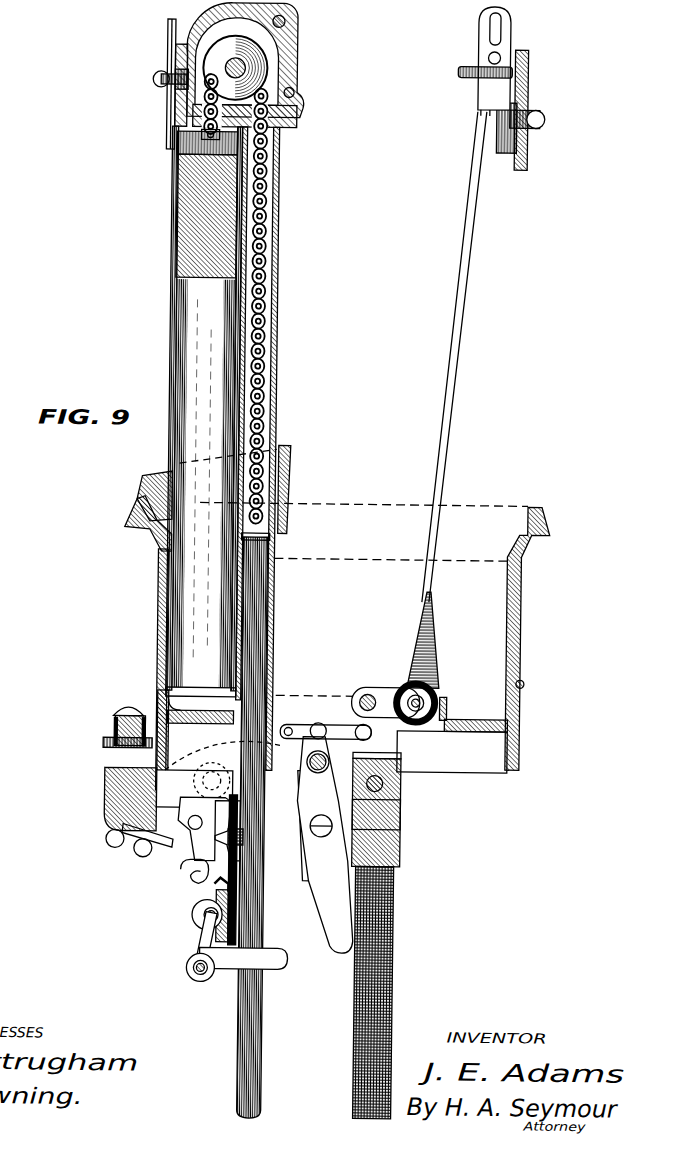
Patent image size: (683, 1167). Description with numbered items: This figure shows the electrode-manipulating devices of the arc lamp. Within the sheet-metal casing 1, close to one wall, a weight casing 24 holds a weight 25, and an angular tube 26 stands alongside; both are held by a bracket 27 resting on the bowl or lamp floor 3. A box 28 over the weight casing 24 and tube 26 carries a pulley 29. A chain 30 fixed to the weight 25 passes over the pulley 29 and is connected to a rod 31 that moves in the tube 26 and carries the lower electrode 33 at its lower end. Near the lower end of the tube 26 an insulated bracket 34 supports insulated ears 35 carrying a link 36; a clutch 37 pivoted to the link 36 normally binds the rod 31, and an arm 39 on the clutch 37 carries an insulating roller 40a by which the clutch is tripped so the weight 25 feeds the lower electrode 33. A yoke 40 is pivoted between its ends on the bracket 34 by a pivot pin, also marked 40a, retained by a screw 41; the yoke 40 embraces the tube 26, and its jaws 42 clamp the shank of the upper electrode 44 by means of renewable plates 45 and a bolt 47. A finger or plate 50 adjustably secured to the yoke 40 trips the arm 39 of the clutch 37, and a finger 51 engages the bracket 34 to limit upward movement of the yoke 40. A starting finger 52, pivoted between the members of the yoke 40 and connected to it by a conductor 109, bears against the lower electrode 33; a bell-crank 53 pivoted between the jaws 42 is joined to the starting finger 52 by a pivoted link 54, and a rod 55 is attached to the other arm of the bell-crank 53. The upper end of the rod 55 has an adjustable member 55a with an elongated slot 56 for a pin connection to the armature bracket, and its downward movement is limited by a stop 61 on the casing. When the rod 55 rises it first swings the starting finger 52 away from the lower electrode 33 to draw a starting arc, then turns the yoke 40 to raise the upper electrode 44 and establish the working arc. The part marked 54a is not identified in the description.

The casing 1 is at (167, 146).
The bowl 3 is at (529, 627).
The weight casing 24 is at (179, 321).
The weight 25 is at (178, 242).
The tube 26 is at (281, 284).
The bracket 27 is at (164, 476).
The box 28 is at (292, 41).
The pulley 29 is at (240, 45).
The chain 30 is at (206, 101).
The rod 31 is at (266, 594).
The lower electrode 33 is at (404, 968).
The bracket 34 is at (216, 898).
The insulated ears 35 is at (206, 922).
The link 36 is at (212, 936).
The clutch 37 is at (245, 971).
The arm 39 is at (198, 970).
The yoke 40 is at (113, 801).
The pivot pin 40a is at (200, 864).
The screw 41 is at (222, 868).
The jaws 42 is at (415, 750).
The upper electrode 44 is at (410, 852).
The renewable plates 45 is at (410, 822).
The bolt 47 is at (410, 798).
The finger or plate 50 is at (272, 806).
The finger 51 is at (176, 852).
The starting finger 52 is at (324, 944).
The bell-crank 53 is at (393, 686).
The pivoted link 54 is at (338, 716).
The pin 54a is at (210, 784).
The rod 55 is at (455, 386).
The adjustable member 55a is at (480, 52).
The elongated slot 56 is at (501, 30).
The stop 61 is at (462, 76).
The conductor 109 is at (297, 726).